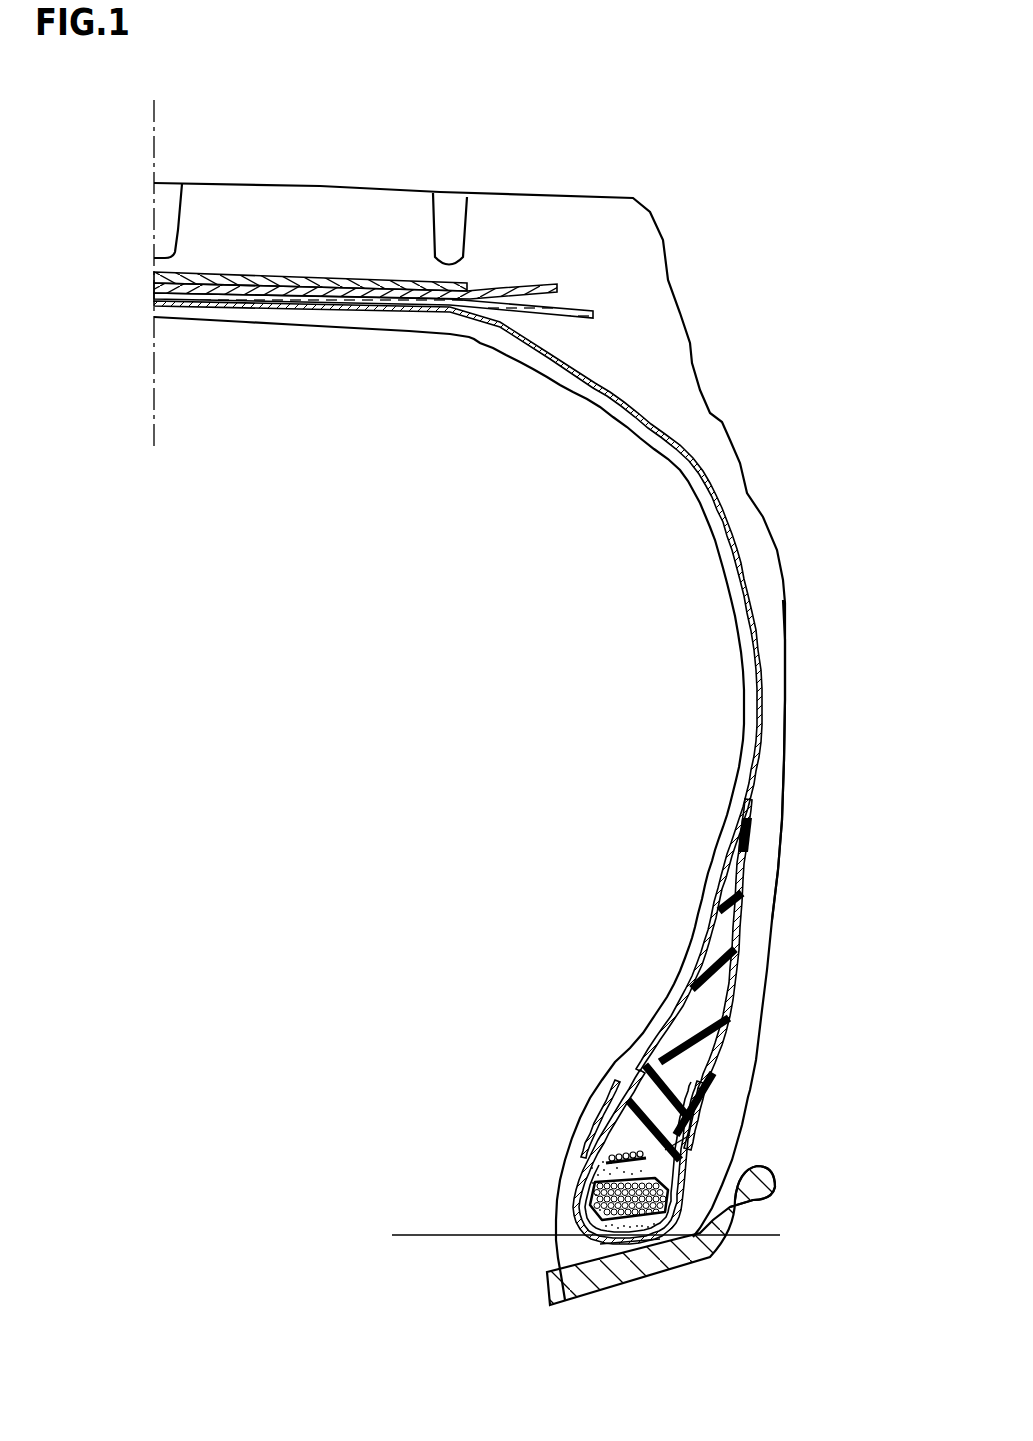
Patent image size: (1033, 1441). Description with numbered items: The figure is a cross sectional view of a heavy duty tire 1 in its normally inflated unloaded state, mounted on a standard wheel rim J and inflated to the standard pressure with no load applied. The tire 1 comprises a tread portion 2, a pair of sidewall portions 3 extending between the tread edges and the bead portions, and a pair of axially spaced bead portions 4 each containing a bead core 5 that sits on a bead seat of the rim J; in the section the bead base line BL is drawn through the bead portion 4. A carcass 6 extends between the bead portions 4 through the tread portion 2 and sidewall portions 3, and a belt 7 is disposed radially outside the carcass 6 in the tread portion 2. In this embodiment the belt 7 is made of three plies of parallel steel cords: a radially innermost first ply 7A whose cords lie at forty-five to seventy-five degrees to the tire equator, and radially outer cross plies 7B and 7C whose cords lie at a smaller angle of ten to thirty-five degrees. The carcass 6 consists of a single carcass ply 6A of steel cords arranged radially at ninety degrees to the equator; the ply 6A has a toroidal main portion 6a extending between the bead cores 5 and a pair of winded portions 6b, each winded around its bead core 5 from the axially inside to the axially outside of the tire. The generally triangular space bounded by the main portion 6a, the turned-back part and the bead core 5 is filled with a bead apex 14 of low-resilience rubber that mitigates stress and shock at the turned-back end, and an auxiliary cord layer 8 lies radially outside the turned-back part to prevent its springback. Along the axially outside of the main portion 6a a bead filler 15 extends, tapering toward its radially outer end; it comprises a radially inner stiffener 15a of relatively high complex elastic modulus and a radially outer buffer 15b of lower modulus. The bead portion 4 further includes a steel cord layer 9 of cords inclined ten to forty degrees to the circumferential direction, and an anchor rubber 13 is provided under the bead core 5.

The heavy duty tire 1 is at (660, 200).
The tread portion 2 is at (343, 175).
The sidewall portion 3 is at (806, 658).
The bead portion 4 is at (721, 1198).
The bead core 5 is at (593, 1187).
The carcass 6 is at (700, 517).
The carcass ply 6A is at (458, 772).
The main portion 6a is at (680, 1010).
The winded portion 6b is at (620, 1083).
The belt 7 is at (313, 292).
The first ply 7A is at (327, 318).
The second ply 7B is at (155, 288).
The third ply 7C is at (155, 277).
The auxiliary cord layer 8 is at (610, 1127).
The steel cord layer 9 is at (587, 1157).
The anchor rubber 13 is at (634, 1243).
The bead apex 14 is at (675, 1150).
The bead filler 15 is at (765, 989).
The stiffener 15a is at (665, 1137).
The buffer 15b is at (707, 1063).
The bead base line BL is at (435, 1235).
The standard wheel rim J is at (723, 1257).